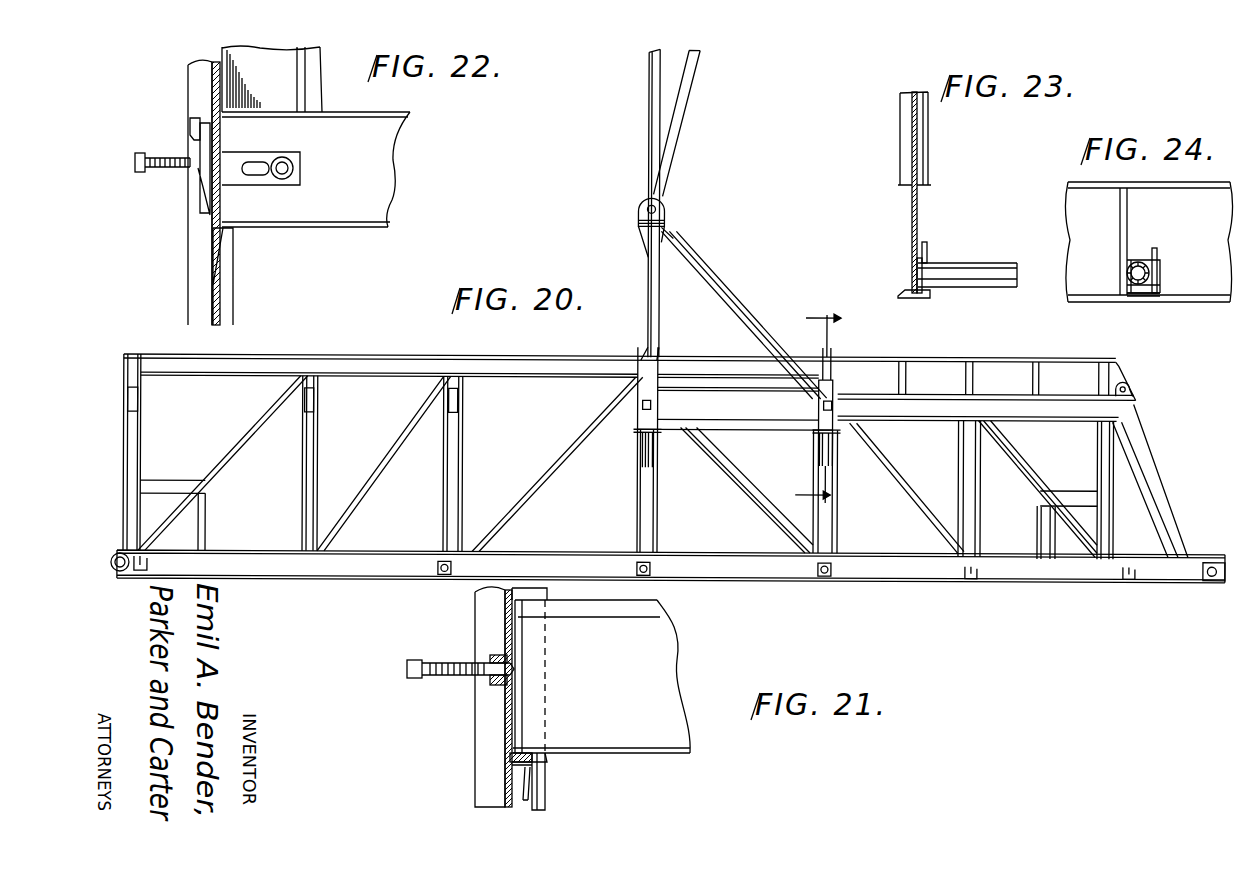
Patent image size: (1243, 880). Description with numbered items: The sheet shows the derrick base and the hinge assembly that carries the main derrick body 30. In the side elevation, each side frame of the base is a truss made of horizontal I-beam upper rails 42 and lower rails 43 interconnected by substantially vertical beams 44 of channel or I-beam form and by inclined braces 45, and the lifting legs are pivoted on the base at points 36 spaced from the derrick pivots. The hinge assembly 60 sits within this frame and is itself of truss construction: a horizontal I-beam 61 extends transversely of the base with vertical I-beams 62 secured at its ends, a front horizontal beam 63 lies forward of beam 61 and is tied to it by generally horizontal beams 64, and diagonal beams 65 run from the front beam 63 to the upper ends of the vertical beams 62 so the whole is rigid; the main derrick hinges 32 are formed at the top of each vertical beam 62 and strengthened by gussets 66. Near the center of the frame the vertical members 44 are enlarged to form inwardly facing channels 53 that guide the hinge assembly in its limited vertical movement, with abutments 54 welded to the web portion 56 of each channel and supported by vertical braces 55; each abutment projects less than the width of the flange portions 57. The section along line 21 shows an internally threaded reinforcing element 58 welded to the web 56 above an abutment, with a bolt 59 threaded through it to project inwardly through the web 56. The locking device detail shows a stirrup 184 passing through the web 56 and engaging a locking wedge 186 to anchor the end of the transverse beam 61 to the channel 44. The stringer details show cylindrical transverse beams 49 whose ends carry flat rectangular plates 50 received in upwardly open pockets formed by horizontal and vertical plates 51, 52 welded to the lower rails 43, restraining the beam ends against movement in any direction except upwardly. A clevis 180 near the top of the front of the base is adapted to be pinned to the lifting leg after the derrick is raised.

In FIG. 20, the section line 21— 21 is at (810, 398).
In FIG. 20, the main derrick body 30 is at (697, 102).
In FIG. 20, the hinge point 32 is at (662, 205).
In FIG. 20, the pivot points of lifting legs 36 is at (1209, 573).
In FIG. 20, the upper rails 42 is at (383, 362).
In FIG. 20, the lower rails 43 is at (350, 560).
In FIG. 23, the lower rails 43 is at (918, 200).
In FIG. 24, the lower rails 43 is at (1203, 288).
In FIG. 20, the vertical beams 44 is at (305, 463).
In FIG. 22, the vertical beams 44 is at (210, 192).
In FIG. 21, the vertical beams 44 is at (482, 705).
In FIG. 20, the inclined braces 45 is at (247, 447).
In FIG. 20, the transverse beams 49 is at (442, 560).
In FIG. 23, the transverse beams 49 is at (990, 273).
In FIG. 24, the transverse beams 49 is at (1128, 275).
In FIG. 23, the flat rectangular plate 50 is at (910, 270).
In FIG. 24, the flat rectangular plate 50 is at (1134, 260).
In FIG. 23, the horizontal plate 51 is at (926, 291).
In FIG. 24, the horizontal plate 51 is at (1147, 292).
In FIG. 23, the vertical plate 52 is at (928, 251).
In FIG. 24, the vertical plate 52 is at (1154, 270).
In FIG. 20, the channels 53 is at (643, 511).
In FIG. 21, the channels 53 is at (540, 778).
In FIG. 20, the abutments 54 is at (637, 428).
In FIG. 21, the abutments 54 is at (520, 768).
In FIG. 20, the vertical braces 55 is at (653, 443).
In FIG. 21, the vertical braces 55 is at (545, 798).
In FIG. 21, the web portion 56 is at (508, 765).
In FIG. 21, the flange portions 57 is at (548, 762).
In FIG. 21, the internally threaded reinforcing element 58 is at (500, 653).
In FIG. 20, the bolt 59 is at (821, 402).
In FIG. 22, the bolt 59 is at (148, 172).
In FIG. 21, the bolt 59 is at (415, 662).
In FIG. 20, the hinge assembly 60 is at (724, 277).
In FIG. 20, the horizontal I-beam 61 is at (650, 392).
In FIG. 22, the horizontal I-beam 61 is at (380, 181).
In FIG. 21, the horizontal I-beam 61 is at (667, 667).
In FIG. 20, the vertical I-beams 62 is at (651, 313).
In FIG. 22, the vertical I-beams 62 is at (272, 79).
In FIG. 20, the front horizontal beam 63 is at (833, 386).
In FIG. 20, the horizontal beams 64 is at (730, 405).
In FIG. 20, the diagonal beams 65 is at (737, 313).
In FIG. 20, the gussets 66 is at (640, 227).
In FIG. 20, the clevis 180 is at (1131, 385).
In FIG. 22, the stirrup 184 is at (200, 168).
In FIG. 22, the locking wedge 186 is at (200, 143).